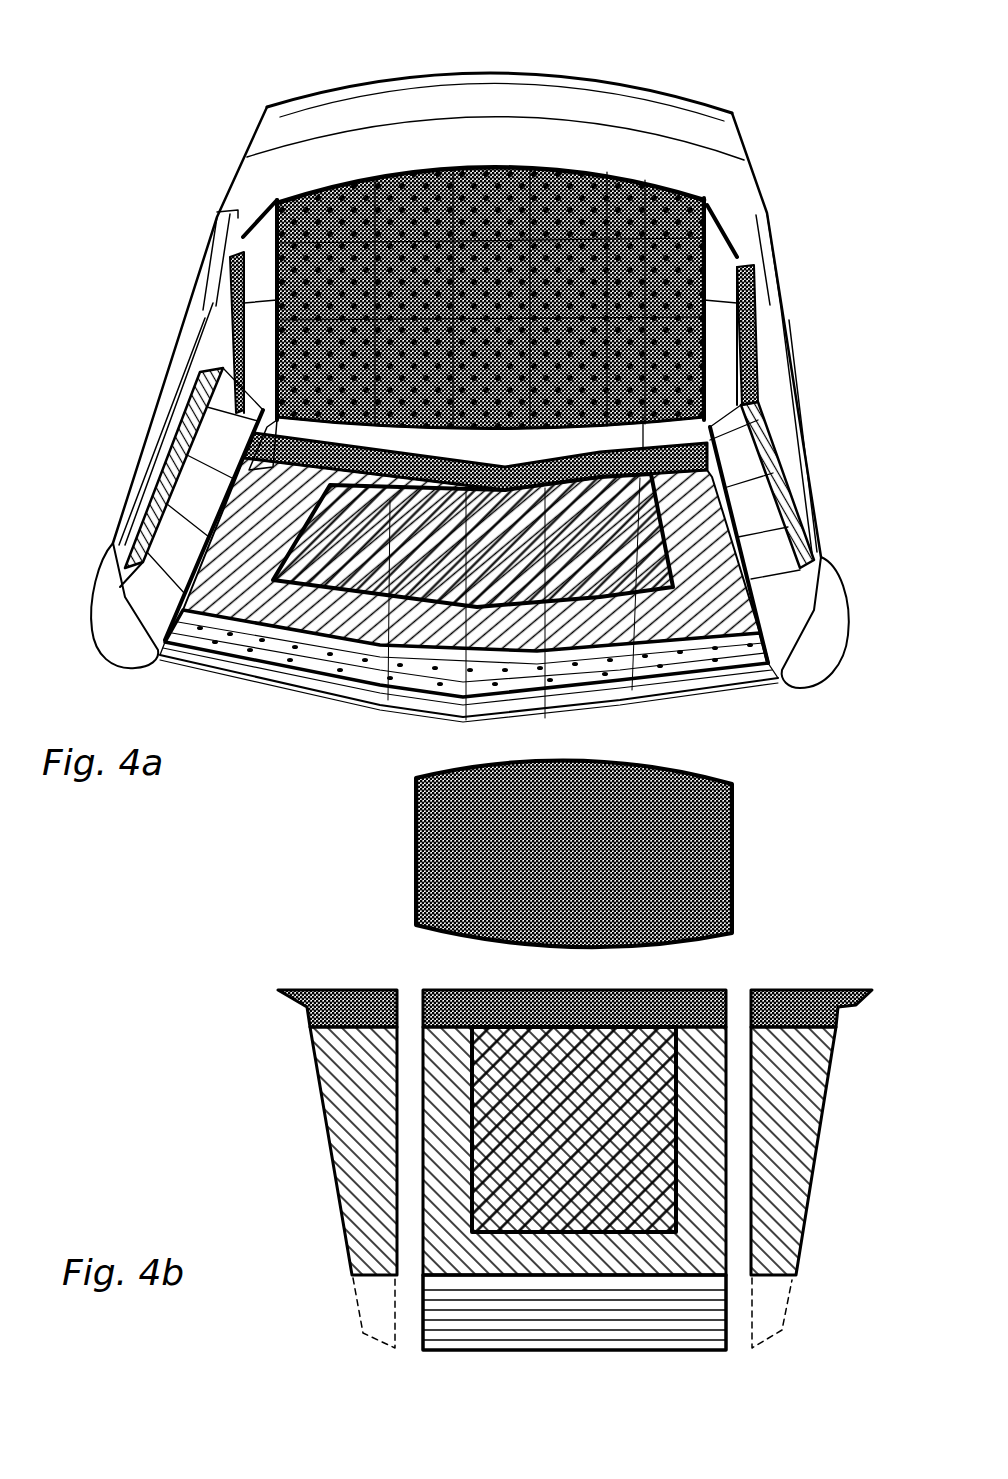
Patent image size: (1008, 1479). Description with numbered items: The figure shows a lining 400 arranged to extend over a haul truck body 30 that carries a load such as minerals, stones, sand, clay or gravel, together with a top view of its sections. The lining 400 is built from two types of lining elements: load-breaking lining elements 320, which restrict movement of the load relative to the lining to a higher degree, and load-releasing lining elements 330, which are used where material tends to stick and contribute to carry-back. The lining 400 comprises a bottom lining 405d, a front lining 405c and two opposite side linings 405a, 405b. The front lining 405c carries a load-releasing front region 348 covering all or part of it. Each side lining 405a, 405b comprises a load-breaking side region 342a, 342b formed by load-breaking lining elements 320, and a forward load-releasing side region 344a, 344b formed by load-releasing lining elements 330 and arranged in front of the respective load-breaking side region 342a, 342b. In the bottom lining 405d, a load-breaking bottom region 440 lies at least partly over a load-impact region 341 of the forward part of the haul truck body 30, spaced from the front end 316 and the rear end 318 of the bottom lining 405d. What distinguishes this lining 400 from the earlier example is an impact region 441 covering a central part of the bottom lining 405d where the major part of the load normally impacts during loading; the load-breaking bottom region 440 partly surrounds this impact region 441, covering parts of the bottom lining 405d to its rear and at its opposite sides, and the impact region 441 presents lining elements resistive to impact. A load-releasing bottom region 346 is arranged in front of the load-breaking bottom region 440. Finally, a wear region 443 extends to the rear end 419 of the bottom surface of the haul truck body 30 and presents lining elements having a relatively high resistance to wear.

In FIG. 4a, the haul truck body 30 is at (178, 86).
In FIG. 4a, the front end 316 is at (487, 389).
In FIG. 4a, the rear end 318 is at (463, 727).
In FIG. 4a, the load-breaking lining elements 320 is at (489, 742).
In FIG. 4a, the load-releasing lining elements 330 is at (578, 450).
In FIG. 4a, the load-impact region 341 is at (487, 546).
In FIG. 4a, the load-breaking side region 342a is at (163, 512).
In FIG. 4b, the load-breaking side region 342a is at (350, 1110).
In FIG. 4a, the load-breaking side region 342b is at (780, 505).
In FIG. 4b, the load-breaking side region 342b is at (794, 1190).
In FIG. 4a, the forward load-releasing side region 344a is at (240, 347).
In FIG. 4b, the forward load-releasing side region 344a is at (358, 1003).
In FIG. 4a, the forward load-releasing side region 344b is at (748, 355).
In FIG. 4b, the forward load-releasing side region 344b is at (771, 1003).
In FIG. 4a, the load-releasing bottom region 346 is at (620, 440).
In FIG. 4b, the load-releasing bottom region 346 is at (558, 1008).
In FIG. 4a, the load-releasing front region 348 is at (474, 298).
In FIG. 4b, the load-releasing front region 348 is at (694, 850).
In FIG. 4a, the lining 400 is at (330, 257).
In FIG. 4a, the side lining 405a is at (139, 481).
In FIG. 4b, the side lining 405a is at (283, 1142).
In FIG. 4a, the side lining 405b is at (812, 485).
In FIG. 4b, the side lining 405b is at (837, 1149).
In FIG. 4a, the front lining 405c is at (474, 263).
In FIG. 4b, the front lining 405c is at (587, 853).
In FIG. 4a, the bottom lining 405d is at (487, 554).
In FIG. 4b, the bottom lining 405d is at (493, 1161).
In FIG. 4a, the rear end 419 is at (433, 733).
In FIG. 4a, the load-breaking bottom region 440 is at (330, 487).
In FIG. 4b, the load-breaking bottom region 440 is at (447, 1180).
In FIG. 4a, the impact region 441 is at (432, 490).
In FIG. 4b, the impact region 441 is at (606, 1073).
In FIG. 4a, the wear region 443 is at (403, 673).
In FIG. 4b, the wear region 443 is at (510, 1320).